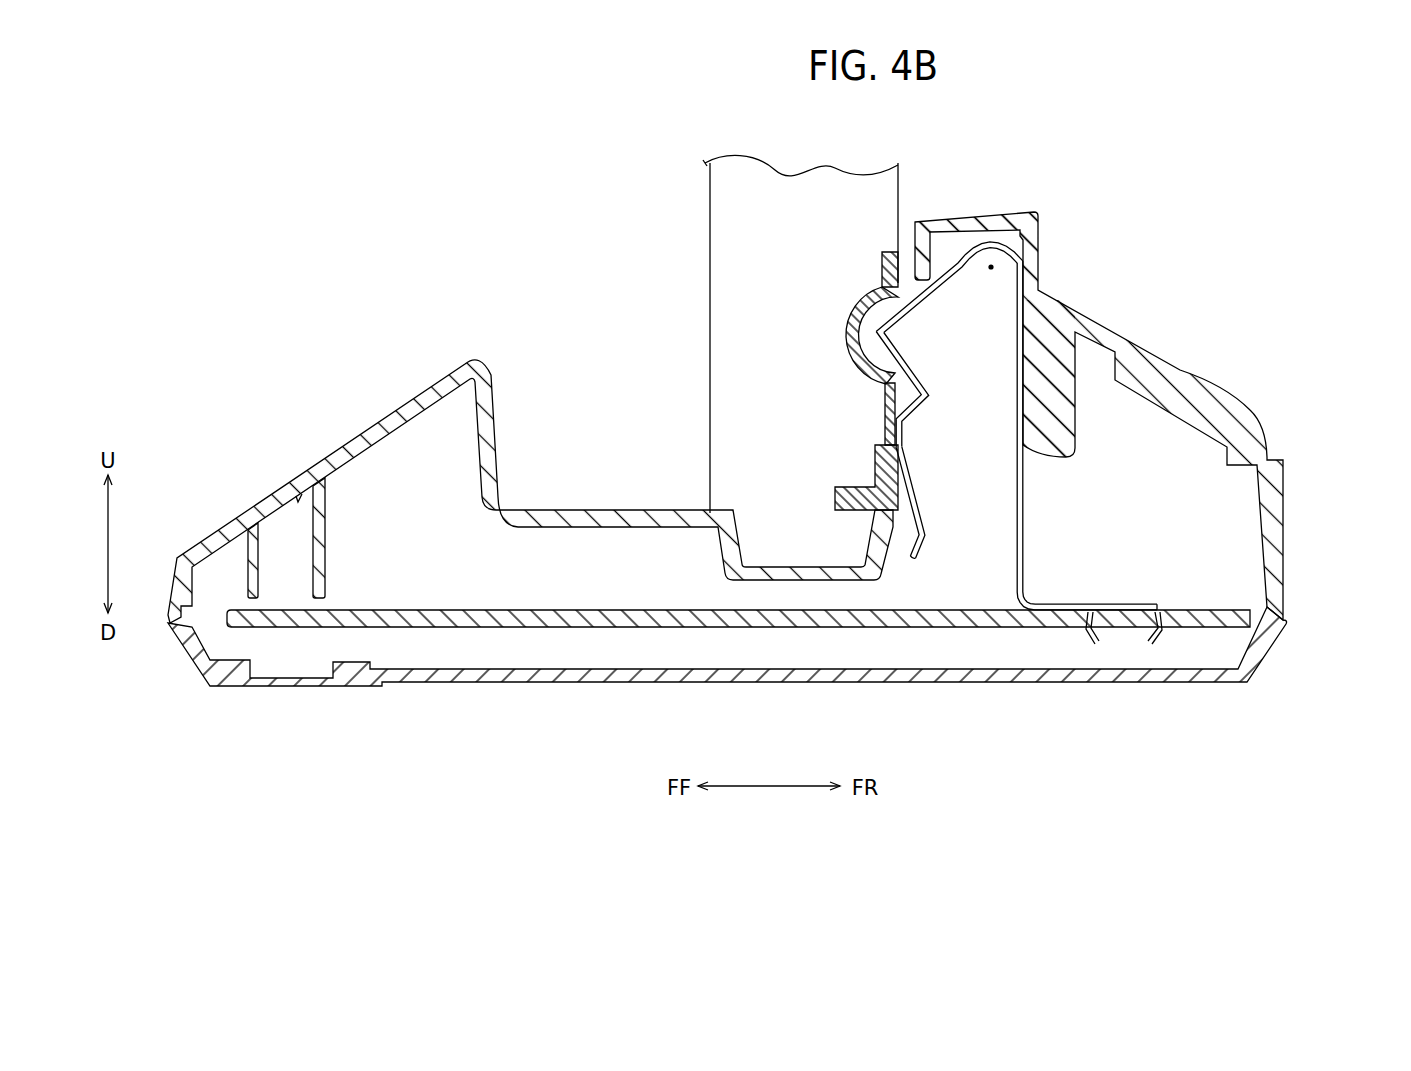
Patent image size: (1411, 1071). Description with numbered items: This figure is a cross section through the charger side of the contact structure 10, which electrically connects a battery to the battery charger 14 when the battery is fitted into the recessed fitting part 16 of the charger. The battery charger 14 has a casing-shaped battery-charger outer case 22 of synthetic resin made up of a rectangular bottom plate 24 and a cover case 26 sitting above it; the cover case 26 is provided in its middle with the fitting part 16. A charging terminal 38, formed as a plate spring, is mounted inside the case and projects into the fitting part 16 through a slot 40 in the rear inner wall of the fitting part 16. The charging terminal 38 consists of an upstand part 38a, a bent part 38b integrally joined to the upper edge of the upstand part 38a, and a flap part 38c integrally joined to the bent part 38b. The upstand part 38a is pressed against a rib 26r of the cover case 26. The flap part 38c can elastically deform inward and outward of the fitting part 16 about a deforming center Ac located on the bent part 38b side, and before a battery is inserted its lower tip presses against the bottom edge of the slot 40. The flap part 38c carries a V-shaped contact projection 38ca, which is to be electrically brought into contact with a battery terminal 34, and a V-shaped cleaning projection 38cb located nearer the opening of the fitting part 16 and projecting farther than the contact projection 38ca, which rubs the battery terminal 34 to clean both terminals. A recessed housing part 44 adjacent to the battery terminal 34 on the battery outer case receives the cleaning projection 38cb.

The contact structure 10 is at (858, 392).
The battery charger 14 is at (440, 366).
The recessed fitting part 16 is at (911, 226).
The battery-charger outer case 22 is at (1355, 562).
The bottom plate 24 is at (1284, 640).
The cover case 26 is at (795, 419).
The rib 26r is at (1063, 428).
The battery terminal 34 is at (913, 402).
The charging terminal 38 is at (948, 438).
The upstand part 38a is at (1025, 522).
The bent part 38b is at (992, 226).
The flap part 38c is at (906, 470).
The contact projection 38ca is at (885, 422).
The cleaning projection 38cb is at (850, 326).
The slot 40 is at (897, 250).
The housing part 44 is at (903, 322).
The deforming center Ac is at (991, 267).